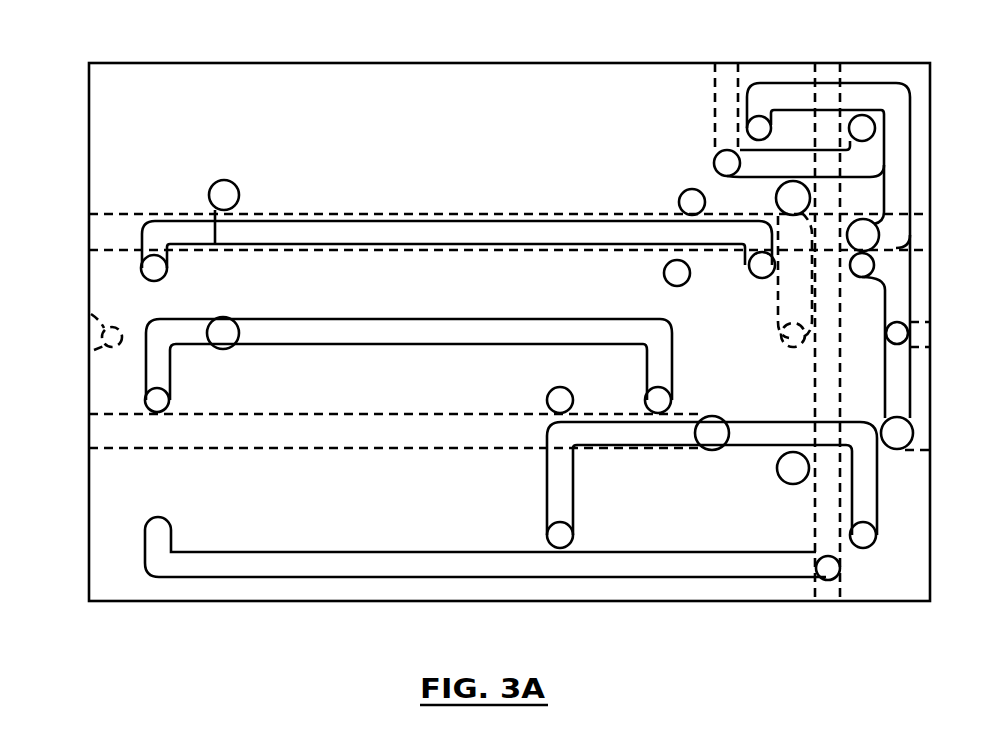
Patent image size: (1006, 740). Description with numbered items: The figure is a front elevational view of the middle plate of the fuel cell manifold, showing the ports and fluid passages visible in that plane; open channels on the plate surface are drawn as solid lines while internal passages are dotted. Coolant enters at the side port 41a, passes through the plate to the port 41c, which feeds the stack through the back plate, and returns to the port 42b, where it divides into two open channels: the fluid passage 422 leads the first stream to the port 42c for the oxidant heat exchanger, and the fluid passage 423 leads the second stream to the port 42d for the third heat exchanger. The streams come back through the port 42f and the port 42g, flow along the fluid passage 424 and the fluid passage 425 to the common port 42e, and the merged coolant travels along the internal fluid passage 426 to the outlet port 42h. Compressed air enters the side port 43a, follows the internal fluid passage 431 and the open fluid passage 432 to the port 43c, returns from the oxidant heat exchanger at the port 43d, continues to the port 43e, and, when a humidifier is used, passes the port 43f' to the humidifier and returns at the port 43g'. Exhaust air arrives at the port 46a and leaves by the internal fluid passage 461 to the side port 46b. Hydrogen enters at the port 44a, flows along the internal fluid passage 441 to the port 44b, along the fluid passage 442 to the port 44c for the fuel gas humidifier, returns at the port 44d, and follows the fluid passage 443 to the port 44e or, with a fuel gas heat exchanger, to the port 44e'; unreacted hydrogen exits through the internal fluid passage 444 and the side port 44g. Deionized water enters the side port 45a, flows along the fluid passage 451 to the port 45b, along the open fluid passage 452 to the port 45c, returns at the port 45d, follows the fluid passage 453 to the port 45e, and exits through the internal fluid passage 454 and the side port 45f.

The port 41a is at (89, 236).
The port 41c is at (794, 347).
The port 42b is at (225, 318).
The port 42c is at (170, 402).
The port 42d is at (663, 401).
The port 42e is at (716, 432).
The port 42f is at (552, 540).
The port 42g is at (864, 548).
The port 42h is at (89, 433).
The port 43a is at (826, 64).
The port 43c is at (157, 531).
The port 43d is at (554, 402).
The port 43e is at (826, 576).
The port 43f' is at (650, 287).
The port 43g' is at (661, 183).
The port 44a is at (725, 64).
The port 44b is at (717, 163).
The port 44c is at (870, 128).
The port 44d is at (758, 278).
The port 44e is at (223, 195).
The port 44e' is at (183, 274).
The port 44g is at (905, 336).
The port 45a is at (932, 238).
The port 45b is at (911, 205).
The port 45c is at (758, 117).
The port 45d is at (868, 268).
The port 45e is at (896, 449).
The port 45f is at (930, 440).
The port 46a is at (100, 355).
The port 46b is at (89, 334).
The fluid passage 422 is at (168, 333).
The fluid passage 423 is at (578, 334).
The fluid passage 424 is at (557, 495).
The fluid passage 425 is at (862, 479).
The fluid passage 426 is at (120, 439).
The fluid passage 431 is at (823, 393).
The fluid passage 432 is at (694, 554).
The fluid passage 441 is at (724, 105).
The fluid passage 442 is at (767, 166).
The fluid passage 443 is at (570, 230).
The fluid passage 444 is at (930, 326).
The fluid passage 451 is at (911, 258).
The fluid passage 452 is at (884, 98).
The fluid passage 453 is at (898, 382).
The fluid passage 454 is at (922, 454).
The fluid passage 461 is at (86, 297).